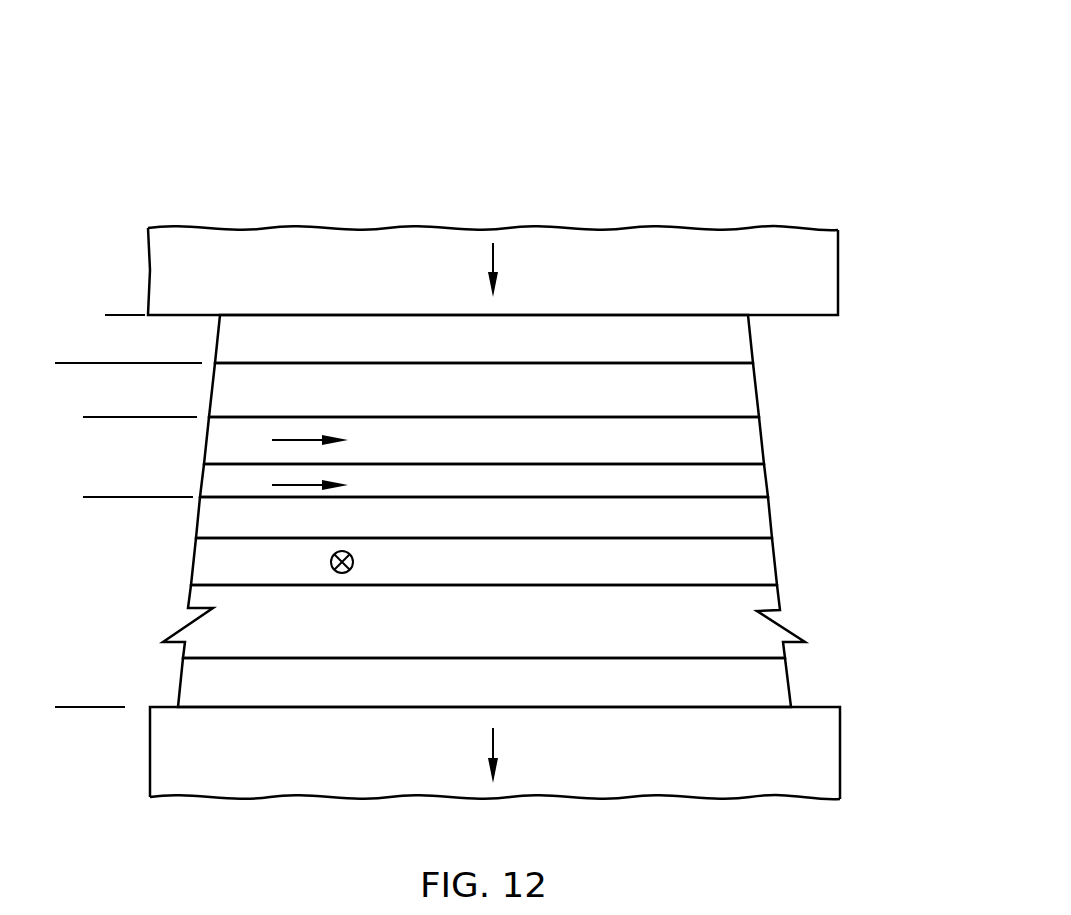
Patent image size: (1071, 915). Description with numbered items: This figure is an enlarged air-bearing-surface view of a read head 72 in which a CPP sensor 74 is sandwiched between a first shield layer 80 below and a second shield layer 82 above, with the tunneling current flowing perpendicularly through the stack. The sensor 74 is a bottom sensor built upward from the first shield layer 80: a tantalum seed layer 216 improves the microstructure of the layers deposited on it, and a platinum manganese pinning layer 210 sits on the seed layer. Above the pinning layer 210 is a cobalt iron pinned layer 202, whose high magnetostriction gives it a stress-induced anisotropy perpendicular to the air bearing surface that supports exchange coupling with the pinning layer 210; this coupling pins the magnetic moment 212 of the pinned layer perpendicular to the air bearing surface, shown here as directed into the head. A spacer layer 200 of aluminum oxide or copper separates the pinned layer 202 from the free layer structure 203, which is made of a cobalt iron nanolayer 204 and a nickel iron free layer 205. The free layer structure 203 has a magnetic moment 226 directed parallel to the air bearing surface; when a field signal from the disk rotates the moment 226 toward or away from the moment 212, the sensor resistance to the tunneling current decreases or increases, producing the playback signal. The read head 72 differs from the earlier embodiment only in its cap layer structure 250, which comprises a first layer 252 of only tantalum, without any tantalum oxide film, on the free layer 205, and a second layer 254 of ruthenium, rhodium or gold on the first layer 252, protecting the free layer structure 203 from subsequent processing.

The read head 72 is at (638, 84).
The second shield layer 82 is at (820, 263).
The first shield layer 80 is at (770, 778).
The second layer of ruthenium, rhodium or gold 254 is at (753, 341).
The first layer of only tantalum 252 is at (758, 402).
The cap layer structure 250 is at (115, 417).
The free layer 205 is at (762, 442).
The nanolayer 204 is at (768, 482).
The free layer structure 203 is at (95, 497).
The spacer layer 200 is at (773, 522).
The pinned layer 202 is at (771, 564).
The pinning layer 210 is at (779, 598).
The seed layer 216 is at (789, 683).
The magnetic moment of the free layer structure 226 is at (288, 485).
The magnetic moment of the pinned layer 212 is at (331, 562).
The CPP sensor 74 is at (72, 363).